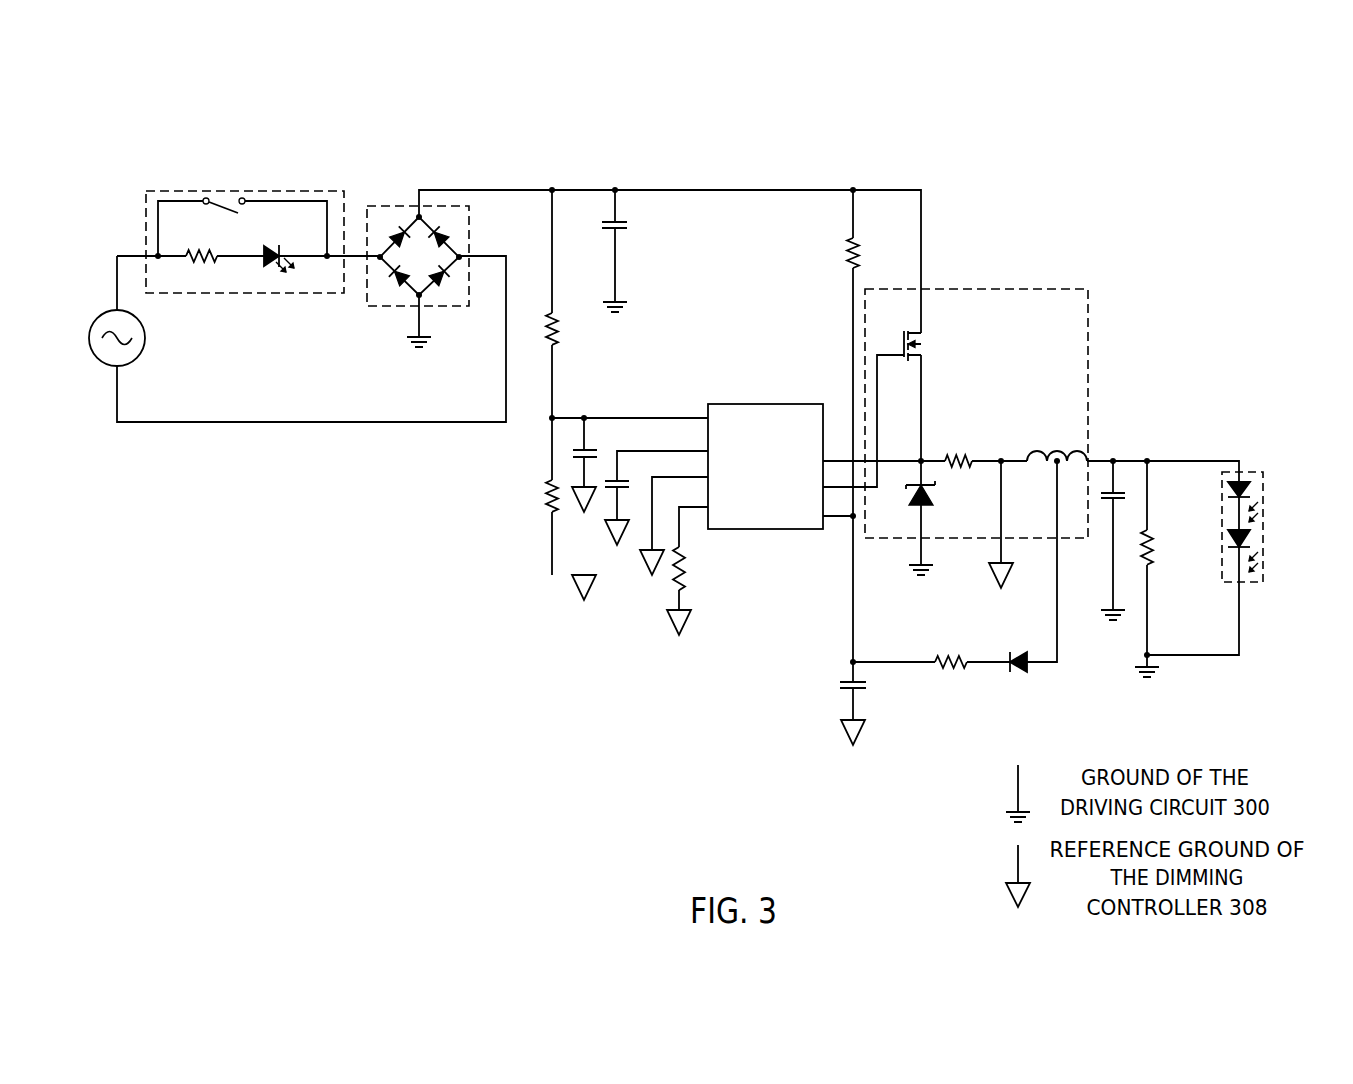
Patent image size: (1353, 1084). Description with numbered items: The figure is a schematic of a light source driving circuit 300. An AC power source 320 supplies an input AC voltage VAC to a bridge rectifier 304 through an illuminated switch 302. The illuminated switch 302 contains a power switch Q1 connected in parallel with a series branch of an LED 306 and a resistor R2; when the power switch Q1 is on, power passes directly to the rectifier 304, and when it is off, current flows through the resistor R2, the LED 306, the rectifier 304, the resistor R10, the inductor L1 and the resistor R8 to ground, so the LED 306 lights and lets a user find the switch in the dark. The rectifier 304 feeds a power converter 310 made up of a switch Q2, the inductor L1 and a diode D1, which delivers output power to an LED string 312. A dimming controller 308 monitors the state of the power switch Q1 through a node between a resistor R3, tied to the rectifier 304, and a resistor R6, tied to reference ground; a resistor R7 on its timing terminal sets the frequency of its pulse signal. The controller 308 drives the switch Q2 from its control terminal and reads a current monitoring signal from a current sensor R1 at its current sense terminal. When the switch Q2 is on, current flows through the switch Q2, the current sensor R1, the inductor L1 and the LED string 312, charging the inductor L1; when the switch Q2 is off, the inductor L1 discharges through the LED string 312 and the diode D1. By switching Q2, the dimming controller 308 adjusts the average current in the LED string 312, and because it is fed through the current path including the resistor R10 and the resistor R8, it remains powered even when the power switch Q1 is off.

The light source driving circuit 300 is at (425, 143).
The illuminated switch 302 is at (245, 225).
The rectifier 304 is at (470, 222).
The LED 306 is at (257, 245).
The dimming controller 308 is at (779, 404).
The power converter 310 is at (976, 419).
The LED string 312 is at (1222, 576).
The AC power source 320 is at (137, 360).
The power switch Q1 is at (213, 210).
The switch Q2 is at (905, 345).
The current sensor R1 is at (951, 463).
The resistor R2 is at (204, 264).
The resistor R3 is at (558, 337).
The resistor R6 is at (546, 505).
The resistor R7 is at (685, 563).
The resistor R8 is at (1150, 528).
The resistor R10 is at (848, 246).
The diode D1 is at (925, 500).
The inductor L1 is at (1041, 462).
The input AC voltage VAC is at (183, 425).